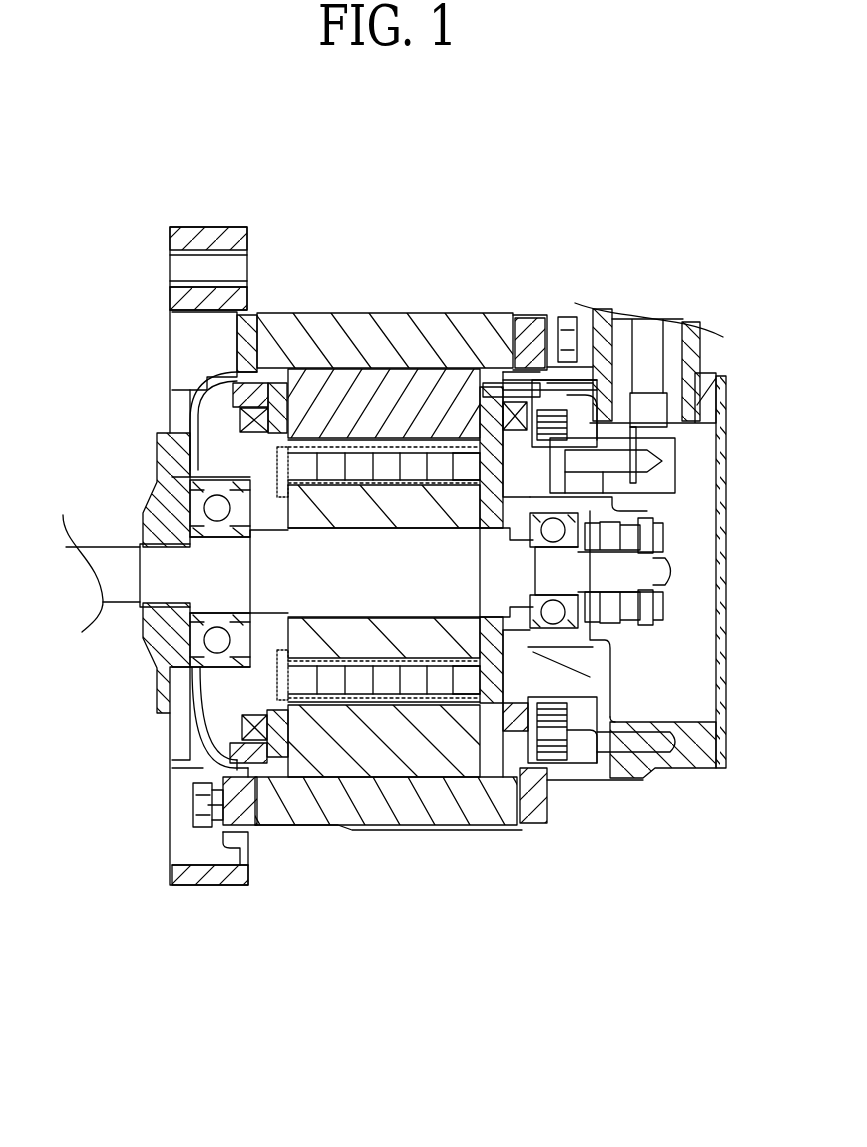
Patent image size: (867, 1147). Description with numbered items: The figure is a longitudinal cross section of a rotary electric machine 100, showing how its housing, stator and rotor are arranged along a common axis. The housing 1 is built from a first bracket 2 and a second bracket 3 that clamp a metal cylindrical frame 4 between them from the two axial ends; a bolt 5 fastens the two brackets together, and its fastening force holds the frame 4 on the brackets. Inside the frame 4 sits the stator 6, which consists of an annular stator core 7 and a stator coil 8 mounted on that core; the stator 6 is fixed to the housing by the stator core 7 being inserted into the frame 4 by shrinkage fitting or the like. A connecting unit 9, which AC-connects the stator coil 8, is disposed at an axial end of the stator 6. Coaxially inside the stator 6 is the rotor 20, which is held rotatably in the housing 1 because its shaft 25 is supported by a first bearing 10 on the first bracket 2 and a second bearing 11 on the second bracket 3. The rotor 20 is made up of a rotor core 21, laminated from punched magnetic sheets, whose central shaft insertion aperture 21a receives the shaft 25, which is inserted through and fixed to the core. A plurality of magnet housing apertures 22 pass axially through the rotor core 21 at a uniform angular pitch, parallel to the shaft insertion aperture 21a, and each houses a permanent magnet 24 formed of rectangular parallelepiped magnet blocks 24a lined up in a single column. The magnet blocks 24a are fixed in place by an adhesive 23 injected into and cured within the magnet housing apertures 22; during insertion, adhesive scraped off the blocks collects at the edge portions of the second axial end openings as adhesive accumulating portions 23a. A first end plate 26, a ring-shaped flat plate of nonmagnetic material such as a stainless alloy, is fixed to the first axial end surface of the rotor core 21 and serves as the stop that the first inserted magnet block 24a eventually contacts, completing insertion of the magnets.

The rotary electric machine 100 is at (82, 118).
The housing 1 is at (165, 887).
The first bracket 2 is at (240, 880).
The second bracket 3 is at (537, 810).
The frame 4 is at (382, 807).
The bolt 5 is at (193, 803).
The stator 6 is at (277, 888).
The stator core 7 is at (322, 762).
The stator coil 8 is at (261, 738).
The connecting unit 9 is at (578, 717).
The first bearing 10 is at (188, 642).
The second bearing 11 is at (578, 620).
The rotor 20 is at (280, 498).
The rotor core 21 is at (405, 437).
The shaft insertion aperture 21a is at (410, 607).
The magnet housing apertures 22 is at (360, 457).
The adhesive 23 is at (328, 453).
The adhesive accumulating portions 23a is at (283, 467).
The permanent magnets 24 is at (421, 470).
The magnet blocks 24a is at (447, 463).
The shaft 25 is at (125, 553).
The first end plate 26 is at (490, 455).